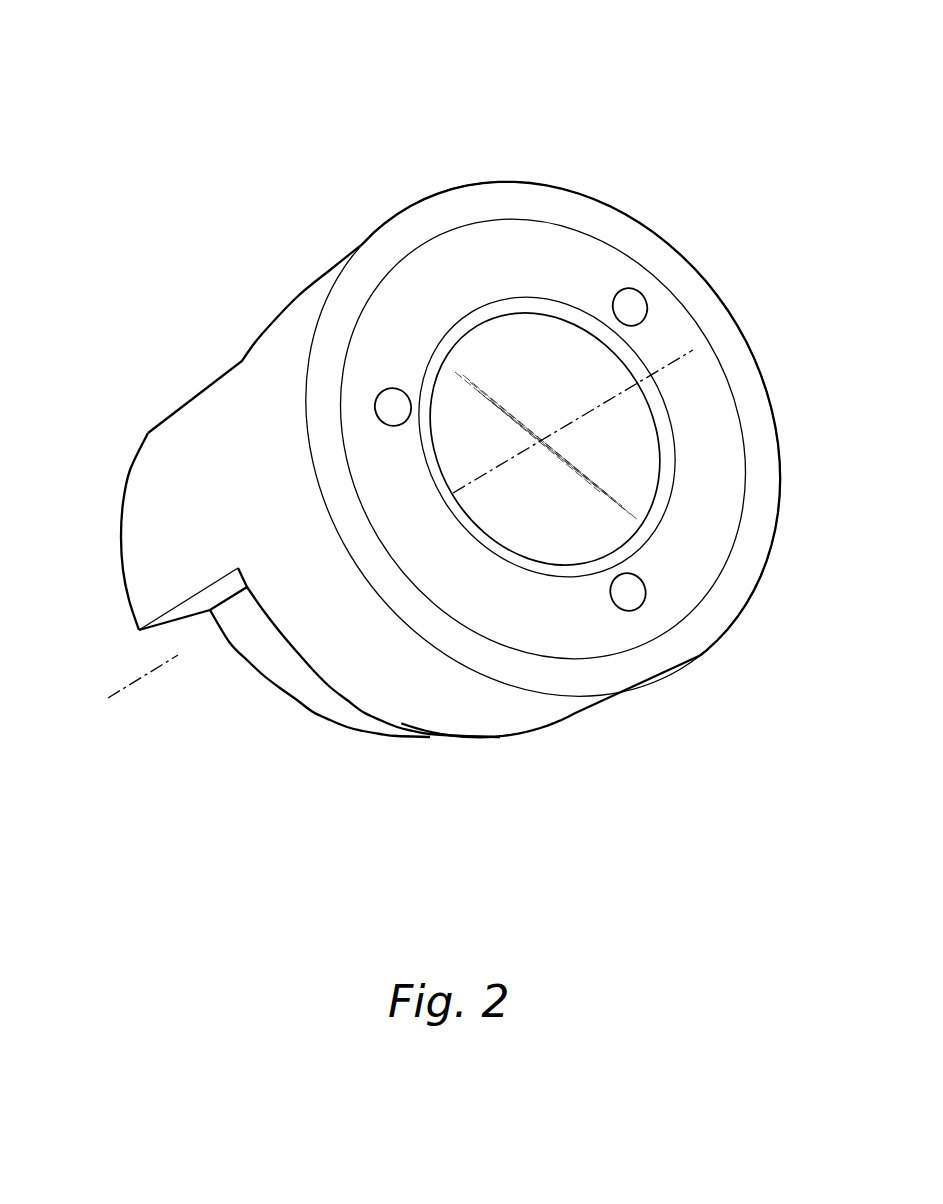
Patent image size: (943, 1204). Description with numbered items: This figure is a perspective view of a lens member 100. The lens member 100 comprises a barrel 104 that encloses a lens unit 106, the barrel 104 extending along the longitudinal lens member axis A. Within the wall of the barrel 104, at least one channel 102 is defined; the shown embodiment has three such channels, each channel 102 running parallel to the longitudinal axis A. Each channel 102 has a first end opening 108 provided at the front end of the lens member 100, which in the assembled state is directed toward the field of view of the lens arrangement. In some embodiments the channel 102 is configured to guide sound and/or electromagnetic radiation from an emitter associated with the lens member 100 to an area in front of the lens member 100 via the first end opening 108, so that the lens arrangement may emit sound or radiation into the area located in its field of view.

The lens member 100 is at (382, 112).
The channel 102 is at (393, 398).
The barrel 104 is at (573, 710).
The lens unit 106 is at (542, 352).
The first end opening 108 is at (383, 410).